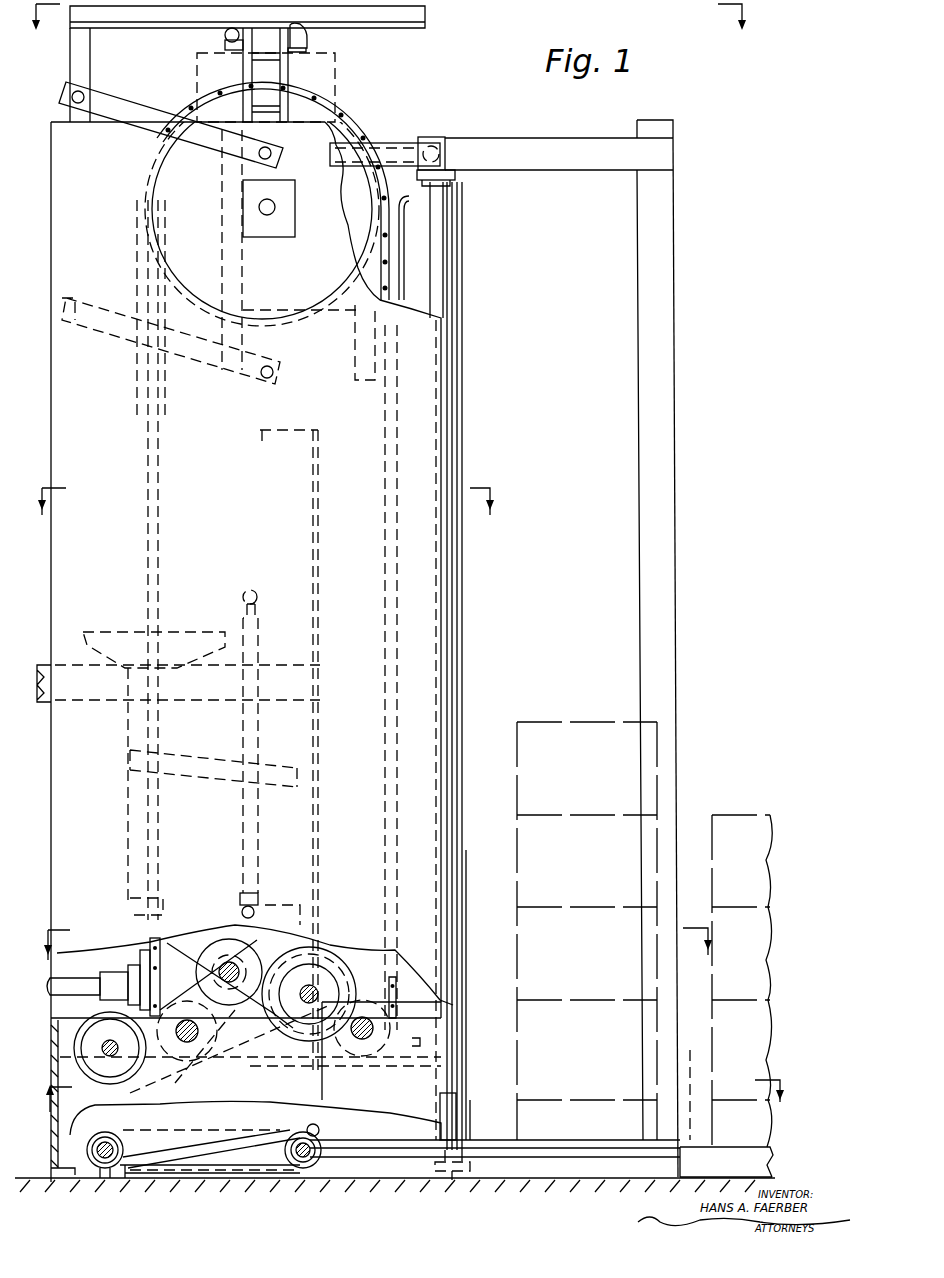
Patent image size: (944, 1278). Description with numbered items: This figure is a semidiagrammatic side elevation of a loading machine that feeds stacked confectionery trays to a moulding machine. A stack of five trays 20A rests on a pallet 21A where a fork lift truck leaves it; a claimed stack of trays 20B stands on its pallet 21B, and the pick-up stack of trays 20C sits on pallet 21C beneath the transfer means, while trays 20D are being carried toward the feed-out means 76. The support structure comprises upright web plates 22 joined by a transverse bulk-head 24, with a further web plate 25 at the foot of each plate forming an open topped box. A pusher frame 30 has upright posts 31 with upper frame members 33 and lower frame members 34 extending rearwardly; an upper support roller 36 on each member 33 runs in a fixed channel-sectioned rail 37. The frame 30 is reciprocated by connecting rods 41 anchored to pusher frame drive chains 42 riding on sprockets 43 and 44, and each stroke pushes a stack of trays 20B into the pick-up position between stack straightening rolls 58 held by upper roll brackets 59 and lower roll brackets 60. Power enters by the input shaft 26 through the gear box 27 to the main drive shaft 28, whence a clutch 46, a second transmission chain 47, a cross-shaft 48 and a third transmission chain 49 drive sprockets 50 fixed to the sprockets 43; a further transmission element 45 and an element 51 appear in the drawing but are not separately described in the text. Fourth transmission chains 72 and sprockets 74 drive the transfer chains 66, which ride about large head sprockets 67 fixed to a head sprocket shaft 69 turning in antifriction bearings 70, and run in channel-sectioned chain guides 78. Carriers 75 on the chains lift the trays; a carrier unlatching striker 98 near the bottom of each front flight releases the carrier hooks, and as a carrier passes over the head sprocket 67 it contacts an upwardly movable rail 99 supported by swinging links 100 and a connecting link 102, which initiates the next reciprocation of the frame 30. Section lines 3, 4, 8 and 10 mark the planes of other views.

The upwardly movable rail 99 is at (120, 18).
The section line 3- 3 is at (389, 16).
The swinging links 100 is at (66, 95).
The carrier 75 is at (298, 69).
The trays 20D is at (337, 79).
The connecting link 102 is at (228, 244).
The transfer chains 66 is at (392, 270).
The head sprocket 67 is at (383, 562).
The head sprocket shaft 69 is at (276, 207).
The antifriction bearings 70 is at (290, 230).
The channel-sectioned rails 37 is at (388, 143).
The upper support roller 36 is at (440, 136).
The upper roll brackets 59 is at (456, 170).
The upper frame members 33 is at (534, 138).
The pusher frame 30 is at (680, 230).
The upright posts 31 is at (662, 438).
The chain guides 78 is at (410, 210).
The upright web plates 22 is at (420, 240).
The stack straightening rolls 58 is at (465, 293).
The lower roll brackets 60 is at (452, 1173).
The lower frame members 34 is at (514, 1162).
The trays 20B is at (587, 911).
The pallet 21B is at (587, 1120).
The trays 20A is at (742, 957).
The pallet 21A is at (742, 1123).
The support 51 is at (694, 1095).
The trays 20C is at (470, 884).
The carrier unlatching striker 98 is at (425, 1042).
The transverse bulk-head 24 is at (320, 603).
The feed-out means 76 is at (108, 610).
The section line 4- 4 is at (266, 501).
The section line 8- 8 is at (371, 944).
The section line 10- 10 is at (417, 1102).
The input shaft 26 is at (85, 978).
The fourth transmission chains 72 is at (190, 985).
The gear box 27 is at (178, 950).
The main drive shaft 28 is at (226, 960).
The rod 45 is at (262, 905).
The clutch 46 is at (360, 968).
The third transmission chain 49 is at (130, 1080).
The cross-shaft 48 is at (192, 1050).
The sprockets 74 is at (216, 1062).
The second transmission chain 47 is at (282, 1060).
The further web plate 25 is at (250, 1076).
The pallet 21C is at (255, 1120).
The sprockets 43 is at (90, 1170).
The sprockets 50 is at (105, 1122).
The sprockets 44 is at (306, 1170).
The connecting rods 41 is at (210, 1148).
The pusher frame drive chains 42 is at (256, 1174).